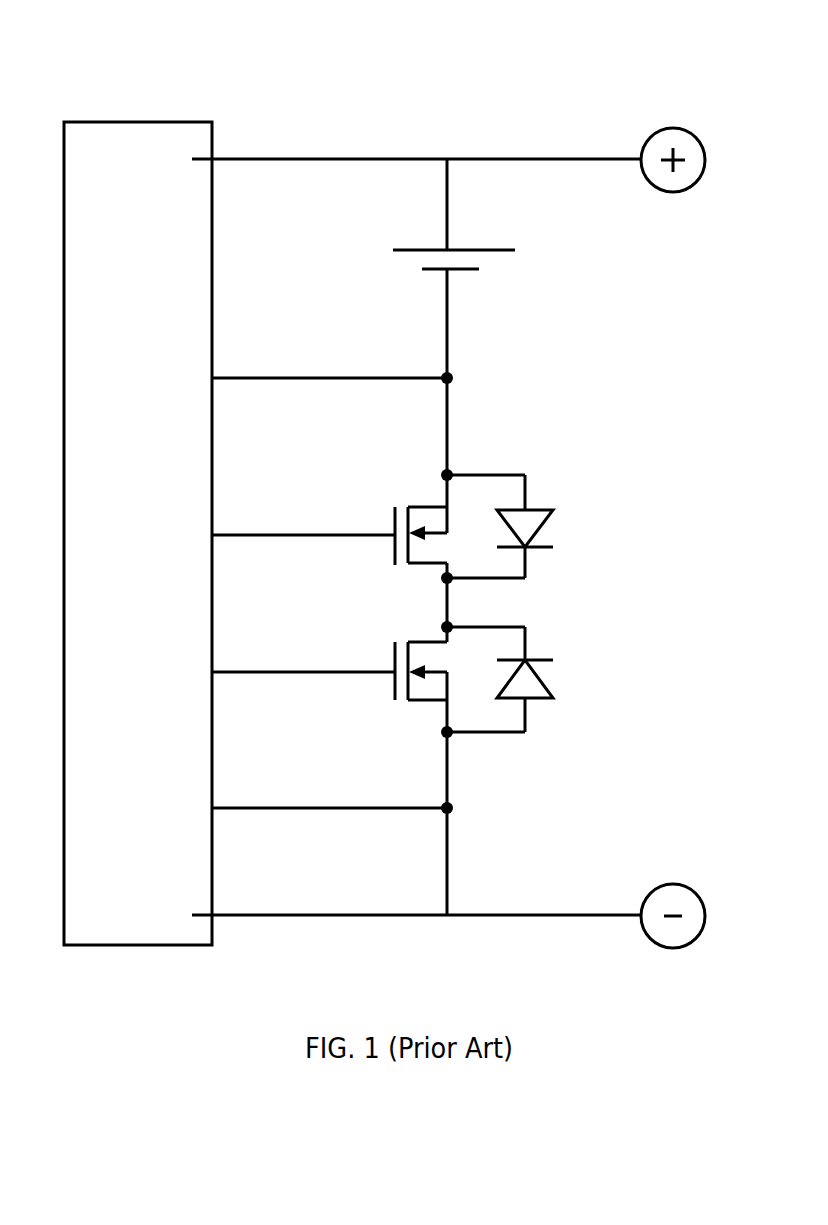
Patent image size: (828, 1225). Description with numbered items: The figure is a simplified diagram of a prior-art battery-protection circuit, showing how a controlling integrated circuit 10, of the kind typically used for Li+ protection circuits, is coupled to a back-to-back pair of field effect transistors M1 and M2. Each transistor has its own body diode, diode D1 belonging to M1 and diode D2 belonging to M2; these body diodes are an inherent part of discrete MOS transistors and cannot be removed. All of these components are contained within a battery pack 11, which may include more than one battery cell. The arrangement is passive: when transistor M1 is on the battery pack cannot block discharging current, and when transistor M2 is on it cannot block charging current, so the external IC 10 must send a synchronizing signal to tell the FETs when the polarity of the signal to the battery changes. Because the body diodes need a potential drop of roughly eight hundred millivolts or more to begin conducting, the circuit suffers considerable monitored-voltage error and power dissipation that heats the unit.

The integrated circuit 10 is at (165, 117).
The battery pack 11 is at (390, 70).
The field effect transistor M1 is at (405, 497).
The field effect transistor M2 is at (390, 678).
The body diode D1 is at (530, 498).
The body diode D2 is at (533, 707).